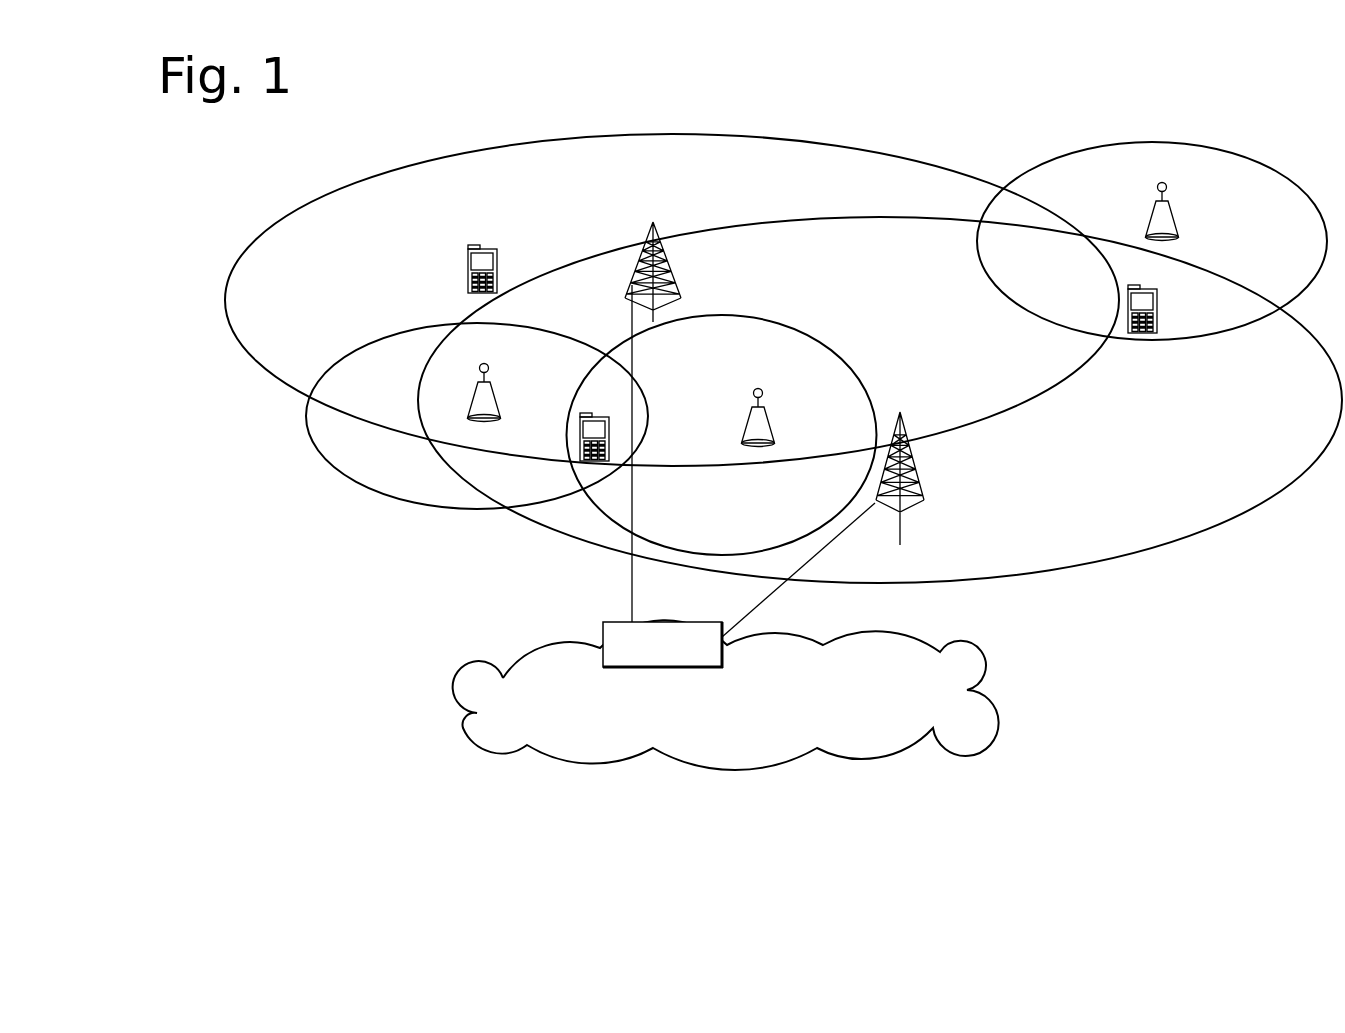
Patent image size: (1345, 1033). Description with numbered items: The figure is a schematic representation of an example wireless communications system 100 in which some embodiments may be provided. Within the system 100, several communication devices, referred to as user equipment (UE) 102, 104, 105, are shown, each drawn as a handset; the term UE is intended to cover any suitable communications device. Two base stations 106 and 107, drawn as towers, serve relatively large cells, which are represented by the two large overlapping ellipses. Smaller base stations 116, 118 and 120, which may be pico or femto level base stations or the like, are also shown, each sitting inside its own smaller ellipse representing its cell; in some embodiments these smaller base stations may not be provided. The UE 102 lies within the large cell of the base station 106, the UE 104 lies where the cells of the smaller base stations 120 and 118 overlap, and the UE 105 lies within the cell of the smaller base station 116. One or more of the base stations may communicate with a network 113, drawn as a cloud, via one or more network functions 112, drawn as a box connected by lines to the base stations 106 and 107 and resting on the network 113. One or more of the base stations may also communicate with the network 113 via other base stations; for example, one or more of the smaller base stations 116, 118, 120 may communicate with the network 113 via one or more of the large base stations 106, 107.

The system 100 is at (318, 182).
The user equipment 102 is at (467, 262).
The user equipment 104 is at (578, 440).
The user equipment 105 is at (1142, 335).
The base station 106 is at (623, 247).
The base station 107 is at (908, 435).
The network function 112 is at (603, 620).
The network 113 is at (530, 677).
The smaller base station 116 is at (1150, 210).
The smaller base station 118 is at (760, 433).
The smaller base station 120 is at (473, 397).